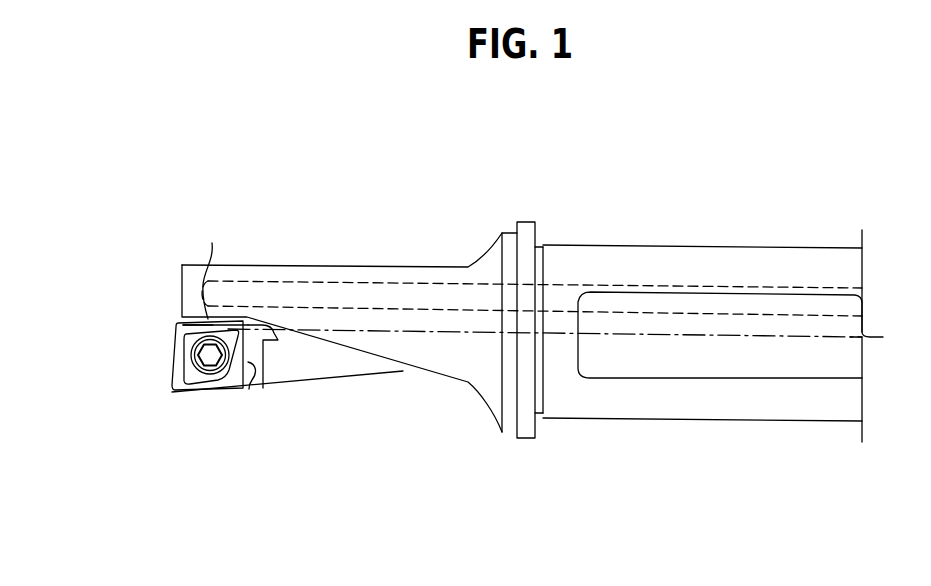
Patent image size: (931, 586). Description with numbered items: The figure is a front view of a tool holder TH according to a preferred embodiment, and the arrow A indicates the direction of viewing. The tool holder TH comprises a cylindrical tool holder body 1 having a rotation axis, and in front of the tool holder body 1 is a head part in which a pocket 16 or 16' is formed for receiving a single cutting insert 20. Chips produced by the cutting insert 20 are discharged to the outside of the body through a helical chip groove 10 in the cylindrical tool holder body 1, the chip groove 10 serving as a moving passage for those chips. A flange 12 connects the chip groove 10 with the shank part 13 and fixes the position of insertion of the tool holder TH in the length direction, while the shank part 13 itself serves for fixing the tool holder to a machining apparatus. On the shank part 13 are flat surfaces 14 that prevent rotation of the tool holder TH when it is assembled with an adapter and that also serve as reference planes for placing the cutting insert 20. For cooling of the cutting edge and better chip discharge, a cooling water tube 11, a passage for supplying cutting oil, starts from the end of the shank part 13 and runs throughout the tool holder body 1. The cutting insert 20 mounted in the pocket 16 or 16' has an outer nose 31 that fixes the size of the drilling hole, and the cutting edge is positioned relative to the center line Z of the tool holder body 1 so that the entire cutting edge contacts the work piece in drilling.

The tool holder TH is at (713, 206).
The tool holder body 1 is at (626, 405).
The chip groove 10 is at (338, 380).
The cooling water tube 11 is at (323, 290).
The flange 12 is at (525, 430).
The shank part 13 is at (618, 246).
The flat surface 14 is at (773, 362).
The pocket 16 is at (258, 385).
The pocket 16' is at (209, 266).
The cutting insert 20 is at (192, 390).
The outer nose 31 is at (181, 392).
The viewing direction A is at (100, 338).
The center line Z is at (213, 327).